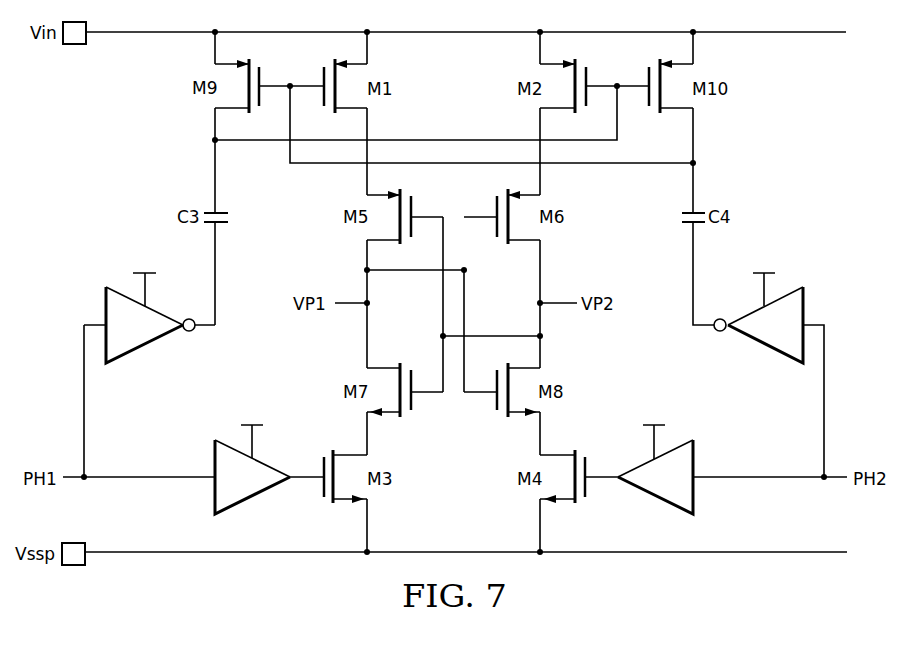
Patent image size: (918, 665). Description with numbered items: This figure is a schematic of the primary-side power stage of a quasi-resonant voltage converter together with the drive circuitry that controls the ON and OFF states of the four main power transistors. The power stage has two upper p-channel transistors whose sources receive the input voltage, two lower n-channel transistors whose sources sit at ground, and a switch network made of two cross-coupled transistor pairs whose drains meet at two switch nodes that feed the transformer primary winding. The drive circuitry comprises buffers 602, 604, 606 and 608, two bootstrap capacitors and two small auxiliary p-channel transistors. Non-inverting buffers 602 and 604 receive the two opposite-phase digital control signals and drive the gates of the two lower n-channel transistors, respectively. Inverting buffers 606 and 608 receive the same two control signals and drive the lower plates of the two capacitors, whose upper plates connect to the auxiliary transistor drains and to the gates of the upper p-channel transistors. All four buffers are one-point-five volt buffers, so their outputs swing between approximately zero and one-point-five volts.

The buffer 602 is at (262, 506).
The buffer 604 is at (651, 500).
The inverting buffer 606 is at (164, 362).
The inverting buffer 608 is at (760, 347).